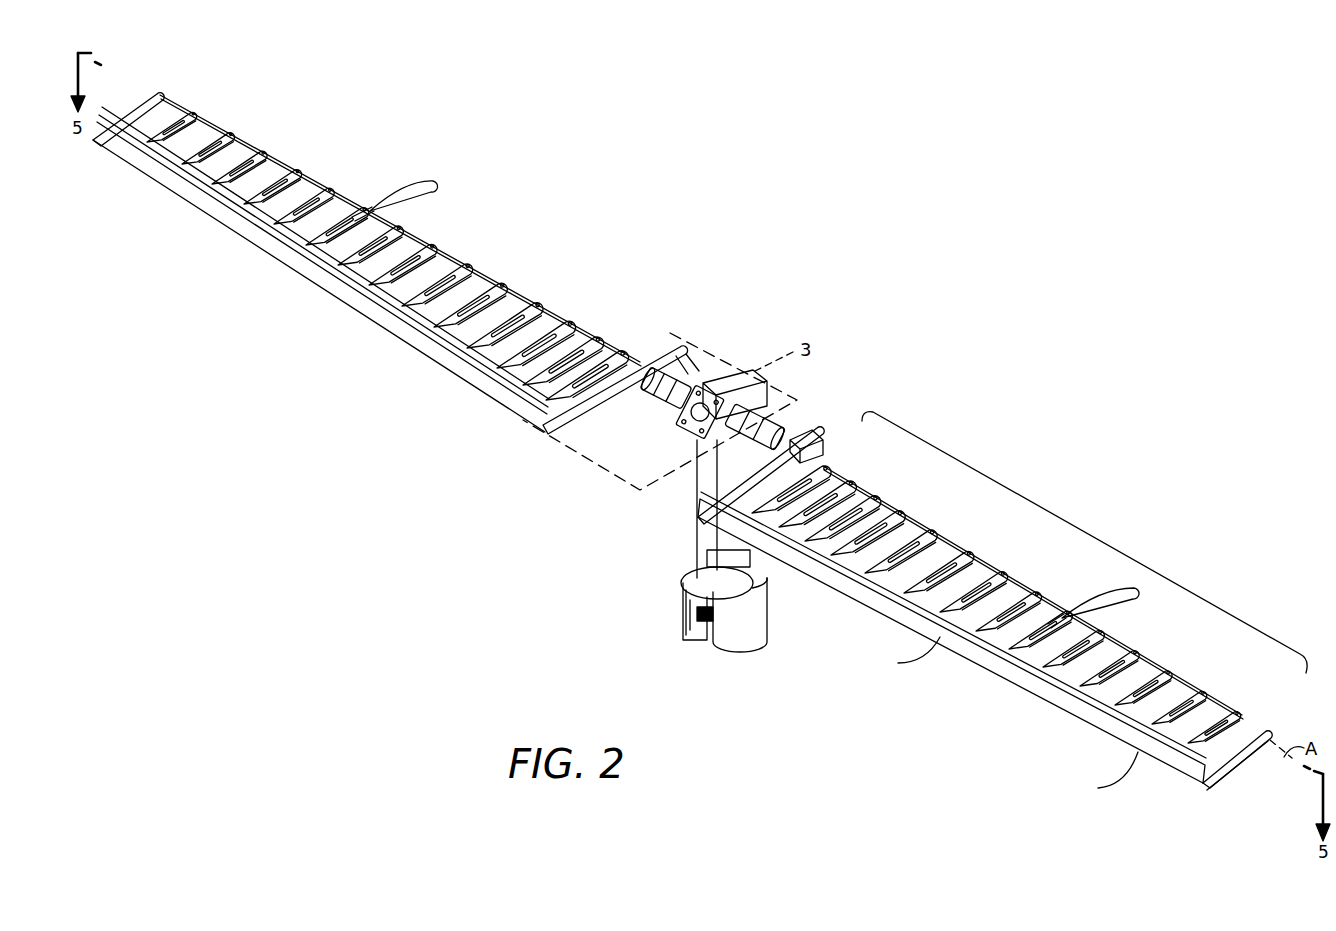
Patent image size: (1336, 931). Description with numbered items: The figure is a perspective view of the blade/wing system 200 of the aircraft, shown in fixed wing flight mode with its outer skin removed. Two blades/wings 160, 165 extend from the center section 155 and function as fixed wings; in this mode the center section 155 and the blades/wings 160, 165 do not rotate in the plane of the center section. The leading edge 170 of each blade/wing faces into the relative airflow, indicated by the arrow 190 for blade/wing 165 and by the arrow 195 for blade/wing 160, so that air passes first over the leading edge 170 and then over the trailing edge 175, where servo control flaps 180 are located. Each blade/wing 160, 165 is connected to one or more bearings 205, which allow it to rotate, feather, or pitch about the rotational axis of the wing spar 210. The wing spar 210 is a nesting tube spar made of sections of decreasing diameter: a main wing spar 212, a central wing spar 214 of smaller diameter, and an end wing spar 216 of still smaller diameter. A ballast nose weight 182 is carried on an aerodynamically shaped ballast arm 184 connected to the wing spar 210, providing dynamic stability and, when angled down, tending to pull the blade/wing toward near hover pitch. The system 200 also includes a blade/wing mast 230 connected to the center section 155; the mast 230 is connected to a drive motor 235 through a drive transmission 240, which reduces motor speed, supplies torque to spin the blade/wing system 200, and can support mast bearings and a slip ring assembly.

The center section 155 is at (725, 336).
The blade/wing 160 is at (132, 113).
The blade/wing 165 is at (1243, 757).
The leading edge 170 is at (462, 263).
The trailing edge 175 is at (233, 238).
The flaps 180 is at (300, 267).
The ballast nose weight 182 is at (428, 187).
The ballast arm 184 is at (380, 197).
The arrow 190 is at (1050, 455).
The arrow 195 is at (570, 200).
The blade/wing system 200 is at (772, 190).
The bearings 205 is at (673, 427).
The wing spar 210 is at (1100, 528).
The main wing spar 212 is at (563, 337).
The central wing spar 214 is at (345, 213).
The end wing spar 216 is at (246, 146).
The blade/wing mast 230 is at (698, 538).
The drive motor 235 is at (757, 615).
The drive transmission 240 is at (682, 585).